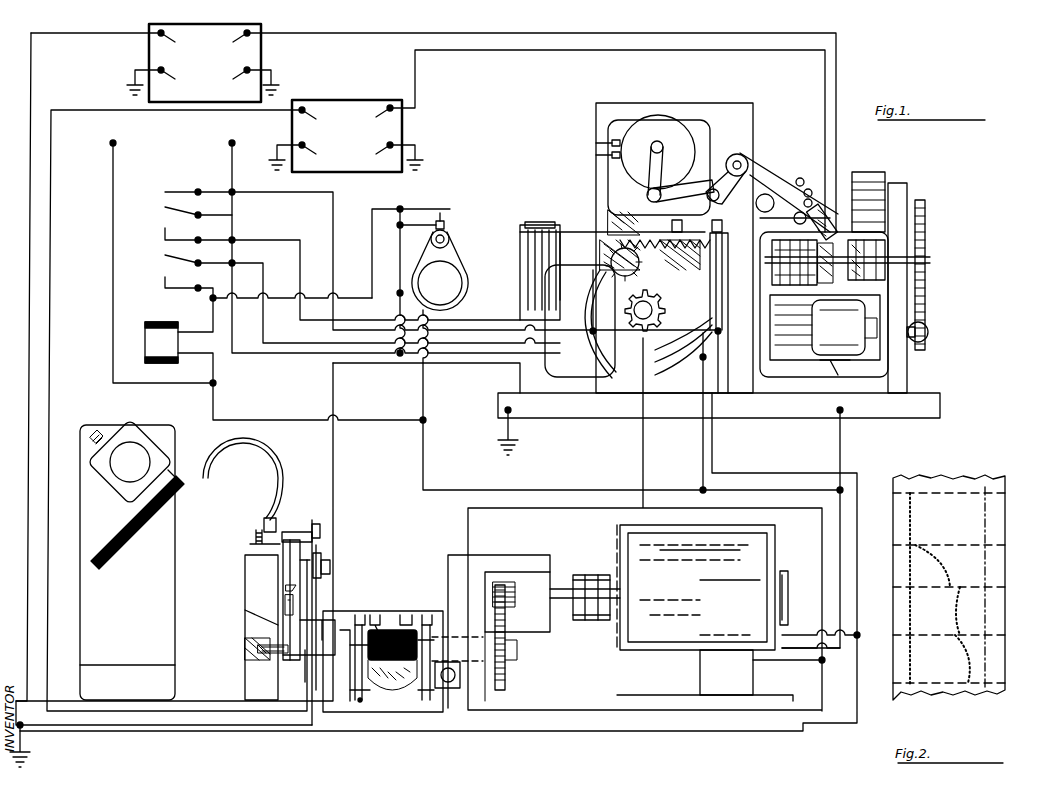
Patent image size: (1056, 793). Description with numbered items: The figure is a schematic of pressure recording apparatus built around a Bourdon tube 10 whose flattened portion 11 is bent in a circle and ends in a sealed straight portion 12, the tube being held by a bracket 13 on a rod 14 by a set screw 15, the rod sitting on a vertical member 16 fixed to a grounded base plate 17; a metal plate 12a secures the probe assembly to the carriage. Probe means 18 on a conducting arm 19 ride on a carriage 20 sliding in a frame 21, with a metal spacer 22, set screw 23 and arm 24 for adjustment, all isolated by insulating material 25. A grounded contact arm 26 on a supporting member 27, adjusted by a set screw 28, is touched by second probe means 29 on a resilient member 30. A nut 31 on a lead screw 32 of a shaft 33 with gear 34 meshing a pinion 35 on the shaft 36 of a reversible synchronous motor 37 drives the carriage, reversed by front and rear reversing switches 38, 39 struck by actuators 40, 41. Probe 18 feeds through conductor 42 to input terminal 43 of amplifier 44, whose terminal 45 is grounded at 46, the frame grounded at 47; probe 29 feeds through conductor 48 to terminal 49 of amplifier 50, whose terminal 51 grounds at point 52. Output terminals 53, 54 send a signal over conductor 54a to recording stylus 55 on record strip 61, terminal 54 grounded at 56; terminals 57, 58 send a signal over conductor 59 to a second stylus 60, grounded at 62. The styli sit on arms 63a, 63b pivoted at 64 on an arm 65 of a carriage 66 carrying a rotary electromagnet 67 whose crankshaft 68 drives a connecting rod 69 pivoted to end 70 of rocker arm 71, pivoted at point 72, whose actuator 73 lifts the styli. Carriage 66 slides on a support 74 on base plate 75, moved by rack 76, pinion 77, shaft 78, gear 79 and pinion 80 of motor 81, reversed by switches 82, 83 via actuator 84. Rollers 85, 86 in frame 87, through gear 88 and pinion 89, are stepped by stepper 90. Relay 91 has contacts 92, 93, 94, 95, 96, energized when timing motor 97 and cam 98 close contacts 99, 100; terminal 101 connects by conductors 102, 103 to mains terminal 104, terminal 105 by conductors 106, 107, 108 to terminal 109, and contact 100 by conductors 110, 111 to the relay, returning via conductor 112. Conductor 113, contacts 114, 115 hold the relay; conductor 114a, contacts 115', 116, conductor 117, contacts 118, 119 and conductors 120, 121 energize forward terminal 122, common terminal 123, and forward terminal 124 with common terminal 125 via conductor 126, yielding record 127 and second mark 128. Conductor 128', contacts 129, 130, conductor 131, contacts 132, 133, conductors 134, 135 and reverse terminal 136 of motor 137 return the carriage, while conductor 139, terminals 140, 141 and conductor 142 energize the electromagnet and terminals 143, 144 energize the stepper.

In FIG. 1, the Bourdon tube 10 is at (133, 538).
In FIG. 1, the flattened portion 11 is at (252, 442).
In FIG. 1, the straight portion 12 is at (267, 522).
In FIG. 1, the cable coupling 12a is at (254, 541).
In FIG. 1, the bracket 13 is at (115, 488).
In FIG. 1, the rod 14 is at (111, 460).
In FIG. 1, the set screw 15 is at (107, 428).
In FIG. 1, the vertical member 16 is at (173, 592).
In FIG. 1, the base plate 17 is at (326, 734).
In FIG. 1, the probe means 18 is at (298, 532).
In FIG. 1, the arm 19 is at (316, 530).
In FIG. 1, the carriage 20 is at (342, 620).
In FIG. 1, the frame 21 is at (449, 572).
In FIG. 1, the metal spacer 22 is at (313, 658).
In FIG. 1, the set screw 23 is at (330, 562).
In FIG. 1, the arm 24 is at (318, 558).
In FIG. 1, the insulating material 25 is at (304, 660).
In FIG. 1, the contact arm 26 is at (288, 560).
In FIG. 1, the supporting member 27 is at (246, 581).
In FIG. 1, the set screw 28 is at (245, 651).
In FIG. 1, the second probe means 29 is at (299, 580).
In FIG. 1, the resilient member 30 is at (298, 604).
In FIG. 1, the nut 31 is at (387, 614).
In FIG. 1, the lead screw 32 is at (384, 612).
In FIG. 1, the shaft 33 is at (460, 637).
In FIG. 1, the gear 34 is at (499, 682).
In FIG. 1, the pinion 35 is at (510, 582).
In FIG. 1, the shaft 36 is at (562, 576).
In FIG. 1, the reversible synchronous motor 37 is at (620, 542).
In FIG. 1, the front reversing switch 38 is at (358, 606).
In FIG. 1, the rear reversing switch 39 is at (423, 609).
In FIG. 1, the front switch actuator 40 is at (366, 609).
In FIG. 1, the rear switch actuator 41 is at (410, 602).
In FIG. 1, the conductor 42 is at (27, 598).
In FIG. 1, the input terminal 43 is at (176, 38).
In FIG. 1, the amplifier 44 is at (218, 29).
In FIG. 1, the input terminal 45 is at (175, 76).
In FIG. 1, the ground 46 is at (134, 72).
In FIG. 1, the ground 47 is at (20, 751).
In FIG. 1, the conductor 48 is at (47, 590).
In FIG. 1, the input terminal 49 is at (317, 115).
In FIG. 1, the second amplifier 50 is at (358, 105).
In FIG. 1, the input terminal 51 is at (317, 151).
In FIG. 1, the ground point 52 is at (277, 145).
In FIG. 1, the output terminal 53 is at (235, 38).
In FIG. 1, the output terminal 54 is at (234, 76).
In FIG. 1, the conductor 54a is at (351, 27).
In FIG. 1, the recording stylus 55 is at (839, 221).
In FIG. 1, the ground 56 is at (272, 69).
In FIG. 1, the output terminal 57 is at (374, 113).
In FIG. 1, the output terminal 58 is at (374, 147).
In FIG. 1, the conductor 59 is at (468, 52).
In FIG. 1, the second recording stylus 60 is at (795, 220).
In FIG. 1, the record strip 61 is at (797, 207).
In FIG. 2, the record strip 61 is at (894, 476).
In FIG. 1, the ground 62 is at (417, 148).
In FIG. 1, the arm 63a is at (821, 182).
In FIG. 1, the arm 63b is at (780, 165).
In FIG. 1, the pivot 64 is at (762, 168).
In FIG. 1, the arm 65 is at (724, 160).
In FIG. 1, the carriage 66 is at (608, 194).
In FIG. 1, the rotary electromagnet 67 is at (668, 117).
In FIG. 1, the crankshaft 68 is at (659, 147).
In FIG. 1, the connecting rod 69 is at (655, 147).
In FIG. 1, the end 70 is at (646, 202).
In FIG. 1, the rocker arm 71 is at (684, 191).
In FIG. 1, the pivot point 72 is at (712, 200).
In FIG. 1, the actuator 73 is at (780, 212).
In FIG. 1, the support 74 is at (580, 232).
In FIG. 1, the base plate 75 is at (572, 420).
In FIG. 1, the rack 76 is at (604, 220).
In FIG. 1, the pinion 77 is at (676, 272).
In FIG. 1, the shaft 78 is at (664, 307).
In FIG. 1, the gear 79 is at (618, 280).
In FIG. 1, the pinion 80 is at (640, 332).
In FIG. 1, the reversible synchronous motor 81 is at (588, 350).
In FIG. 1, the front reversing switch 82 is at (526, 224).
In FIG. 1, the rear reversing switch 83 is at (712, 221).
In FIG. 1, the actuator 84 is at (672, 221).
In FIG. 1, the roller 85 is at (876, 172).
In FIG. 1, the roller 86 is at (880, 244).
In FIG. 1, the frame 87 is at (902, 362).
In FIG. 1, the gear 88 is at (926, 236).
In FIG. 1, the pinion 89 is at (928, 328).
In FIG. 1, the electromagnetic stepper 90 is at (812, 360).
In FIG. 1, the relay 91 is at (145, 339).
In FIG. 1, the movable contact 92 is at (164, 258).
In FIG. 1, the fixed contact 93 is at (164, 287).
In FIG. 1, the second movable contact 94 is at (164, 212).
In FIG. 1, the fixed contact 95 is at (165, 192).
In FIG. 1, the fixed contact 96 is at (164, 238).
In FIG. 1, the synchronous timing motor 97 is at (462, 283).
In FIG. 1, the eccentric cam 98 is at (431, 240).
In FIG. 1, the movable switch contact 99 is at (444, 222).
In FIG. 1, the fixed switch contact 100 is at (423, 208).
In FIG. 1, the terminal 101 is at (423, 318).
In FIG. 1, the conductor 102 is at (423, 394).
In FIG. 1, the conductor 103 is at (110, 242).
In FIG. 1, the supply mains terminal 104 is at (113, 145).
In FIG. 1, the terminal 105 is at (398, 314).
In FIG. 1, the conductor 106 is at (398, 292).
In FIG. 1, the conductor 107 is at (399, 266).
In FIG. 1, the conductor 108 is at (238, 196).
In FIG. 1, the supply mains terminal 109 is at (232, 145).
In FIG. 1, the conductor 110 is at (369, 256).
In FIG. 1, the conductor 111 is at (213, 303).
In FIG. 1, the conductor 112 is at (213, 368).
In FIG. 1, the conductor 113 is at (302, 352).
In FIG. 1, the movable switch contact 114 is at (554, 224).
In FIG. 1, the conductor 114a is at (280, 228).
In FIG. 1, the fixed switch contact 115 is at (574, 254).
In FIG. 1, the fixed switch contact 115' is at (512, 254).
In FIG. 1, the movable contact 116 is at (528, 229).
In FIG. 1, the conductor 117 is at (466, 362).
In FIG. 1, the movable contact 118 is at (348, 724).
In FIG. 1, the fixed contact 119 is at (362, 704).
In FIG. 1, the conductor 120 is at (857, 730).
In FIG. 1, the conductor 121 is at (856, 634).
In FIG. 1, the forward rotation terminal 122 is at (782, 635).
In FIG. 1, the common motor terminal 123 is at (782, 662).
In FIG. 1, the forward rotation terminal 124 is at (678, 335).
In FIG. 1, the common terminal 125 is at (678, 346).
In FIG. 1, the conductor 126 is at (712, 440).
In FIG. 2, the record 127 is at (893, 493).
In FIG. 2, the second mark 128 is at (965, 587).
In FIG. 1, the conductor 128' is at (351, 272).
In FIG. 1, the contact 129 is at (720, 302).
In FIG. 1, the contact 130 is at (710, 244).
In FIG. 1, the conductor 131 is at (650, 468).
In FIG. 1, the contact 132 is at (425, 702).
In FIG. 1, the contact 133 is at (422, 690).
In FIG. 1, the conductor 134 is at (822, 694).
In FIG. 1, the conductor 135 is at (818, 660).
In FIG. 1, the reverse rotation terminal 136 is at (778, 654).
In FIG. 1, the motor 137 is at (678, 357).
In FIG. 1, the conductor 139 is at (594, 300).
In FIG. 1, the terminal 140 is at (596, 150).
In FIG. 1, the terminal 141 is at (596, 132).
In FIG. 1, the conductor 142 is at (796, 418).
In FIG. 1, the terminal 143 is at (860, 385).
In FIG. 1, the terminal 144 is at (870, 370).